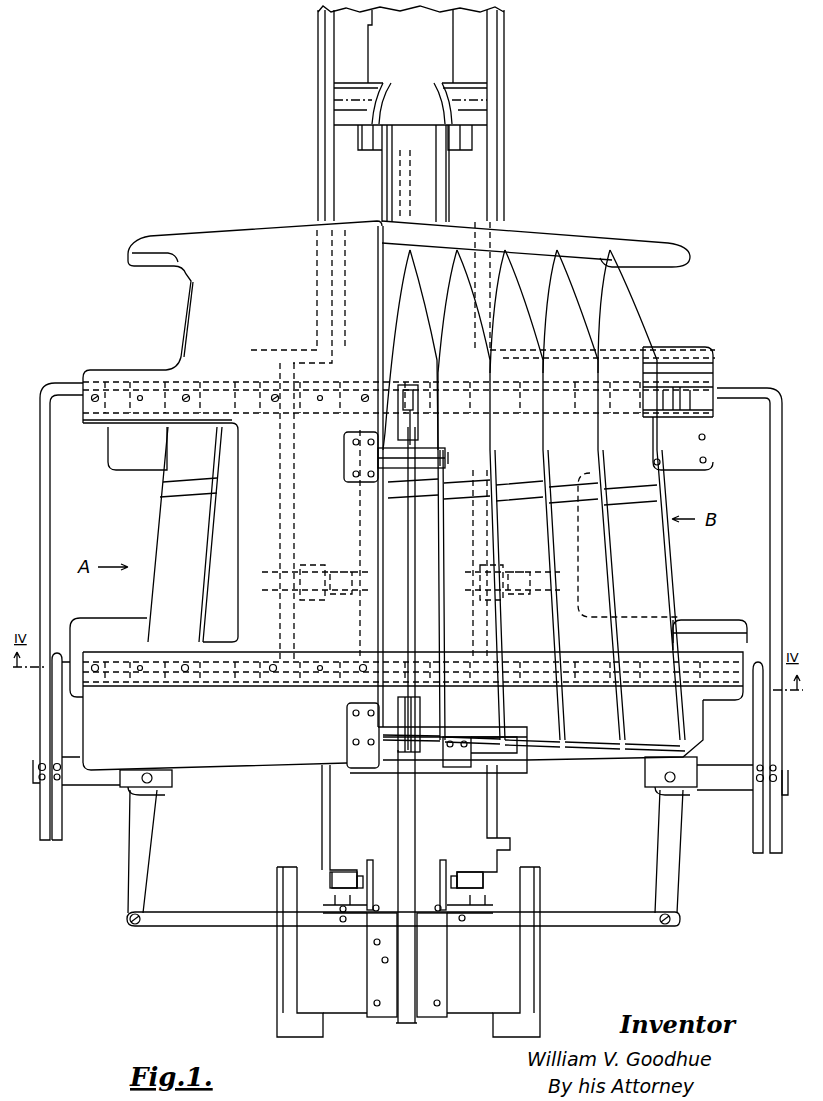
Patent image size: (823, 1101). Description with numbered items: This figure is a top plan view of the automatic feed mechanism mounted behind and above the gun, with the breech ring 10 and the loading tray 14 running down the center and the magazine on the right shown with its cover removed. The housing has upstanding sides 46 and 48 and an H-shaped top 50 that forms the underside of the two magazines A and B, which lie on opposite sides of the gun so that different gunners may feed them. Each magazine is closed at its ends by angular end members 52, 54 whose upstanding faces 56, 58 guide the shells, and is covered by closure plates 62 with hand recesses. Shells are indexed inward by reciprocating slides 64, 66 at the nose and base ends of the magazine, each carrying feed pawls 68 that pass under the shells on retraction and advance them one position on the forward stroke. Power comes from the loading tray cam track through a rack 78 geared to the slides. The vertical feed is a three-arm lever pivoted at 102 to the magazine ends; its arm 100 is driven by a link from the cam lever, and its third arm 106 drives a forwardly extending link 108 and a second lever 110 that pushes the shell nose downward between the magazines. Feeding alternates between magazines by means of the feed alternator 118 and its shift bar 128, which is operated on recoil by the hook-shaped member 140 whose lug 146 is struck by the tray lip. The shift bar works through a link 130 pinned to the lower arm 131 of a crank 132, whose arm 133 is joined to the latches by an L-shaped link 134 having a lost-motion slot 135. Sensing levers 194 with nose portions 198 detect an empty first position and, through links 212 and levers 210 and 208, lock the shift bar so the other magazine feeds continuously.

The breech ring 10 is at (457, 20).
The loading tray 14 is at (425, 187).
The closure plates 62 is at (232, 240).
The upstanding face 56 is at (582, 260).
The angular end member 52 is at (713, 365).
The reciprocating slide 64 is at (205, 382).
The feed pawls 68 is at (662, 398).
The H-shaped top 50 is at (130, 468).
The upstanding side 46 is at (282, 520).
The upstanding side 48 is at (528, 517).
The rack 78 is at (312, 568).
The second lever 110 is at (400, 425).
The pivot 102 is at (352, 457).
The forwardly extending link 108 is at (410, 528).
The third arm 106 is at (418, 713).
The nose portion 198 is at (490, 744).
The reciprocating slide 66 is at (748, 652).
The angular end member 54 is at (704, 715).
The upstanding face 58 is at (608, 745).
The L-shaped link 134 is at (770, 495).
The slot 135 is at (773, 772).
The crank arm 133 is at (105, 787).
The lower arm 131 is at (148, 843).
The crank 132 is at (691, 805).
The link 130 is at (160, 924).
The sensing levers 194 is at (324, 793).
The hook-shaped member 140 is at (414, 793).
The arm 100 is at (490, 793).
The links 212 is at (345, 875).
The levers 210 is at (366, 890).
The shift bar 128 is at (450, 918).
The feed alternator 118 is at (440, 987).
The levers 208 is at (366, 936).
The lug 146 is at (408, 965).